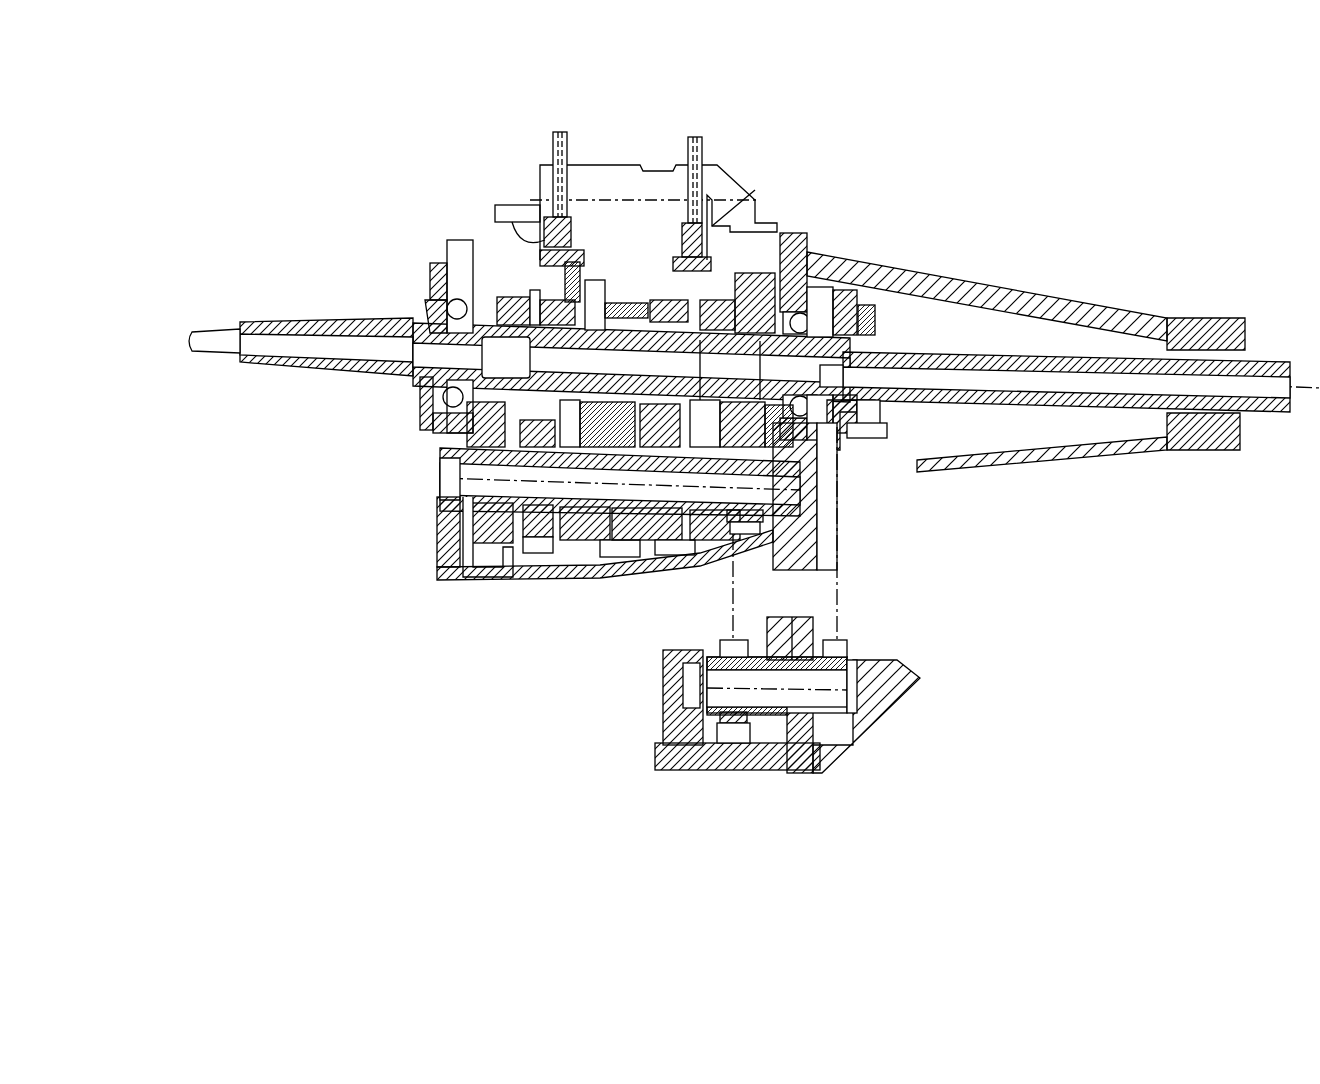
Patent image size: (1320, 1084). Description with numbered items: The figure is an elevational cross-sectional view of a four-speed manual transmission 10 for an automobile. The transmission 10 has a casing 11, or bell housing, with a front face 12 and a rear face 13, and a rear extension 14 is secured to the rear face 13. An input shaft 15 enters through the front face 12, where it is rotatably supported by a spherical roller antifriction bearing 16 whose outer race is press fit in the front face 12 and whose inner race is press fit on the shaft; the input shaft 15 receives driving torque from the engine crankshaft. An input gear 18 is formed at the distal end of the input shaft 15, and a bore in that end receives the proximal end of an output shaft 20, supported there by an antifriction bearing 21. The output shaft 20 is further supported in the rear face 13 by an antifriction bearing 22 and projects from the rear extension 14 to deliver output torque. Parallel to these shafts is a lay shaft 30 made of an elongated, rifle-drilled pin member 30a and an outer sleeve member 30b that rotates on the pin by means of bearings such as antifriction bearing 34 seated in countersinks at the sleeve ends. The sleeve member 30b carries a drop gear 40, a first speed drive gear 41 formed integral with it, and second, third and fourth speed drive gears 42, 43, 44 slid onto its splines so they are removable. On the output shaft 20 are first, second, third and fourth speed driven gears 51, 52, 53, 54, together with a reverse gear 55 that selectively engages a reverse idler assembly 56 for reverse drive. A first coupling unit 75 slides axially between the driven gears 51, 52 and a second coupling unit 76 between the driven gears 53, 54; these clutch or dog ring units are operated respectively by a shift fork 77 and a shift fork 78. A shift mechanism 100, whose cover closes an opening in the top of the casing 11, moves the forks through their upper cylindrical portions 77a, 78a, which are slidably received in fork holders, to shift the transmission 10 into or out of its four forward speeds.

The manual transmission 10 is at (815, 186).
The casing 11 is at (437, 582).
The front face 12 is at (437, 542).
The rear face 13 is at (828, 240).
The rear extension 14 is at (967, 274).
The input shaft 15 is at (240, 330).
The antifriction bearing 16 is at (420, 410).
The input gear 18 is at (500, 298).
The output shaft 20 is at (1265, 404).
The antifriction bearing 21 is at (518, 302).
The antifriction bearing 22 is at (840, 450).
The lay shaft 30 is at (440, 463).
The pin member 30a is at (445, 476).
The outer sleeve member 30b is at (712, 534).
The antifriction bearing 34 is at (813, 525).
The drop gear 40 is at (503, 548).
The first speed drive gear 41 is at (745, 528).
The second speed drive gear 42 is at (657, 540).
The third speed drive gear 43 is at (618, 552).
The fourth speed drive gear 44 is at (537, 548).
The first speed driven gear 51 is at (785, 287).
The second speed driven gear 52 is at (667, 300).
The third speed driven gear 53 is at (600, 302).
The fourth speed driven gear 54 is at (513, 300).
The reverse gear 55 is at (845, 452).
The reverse idler assembly 56 is at (852, 648).
The first coupling unit 75 is at (680, 488).
The second coupling unit 76 is at (468, 438).
The shift fork 77 is at (760, 242).
The upper cylindrical portion 77a is at (755, 199).
The shift fork 78 is at (578, 290).
The upper cylindrical portion 78a is at (547, 297).
The shift mechanism 100 is at (728, 170).